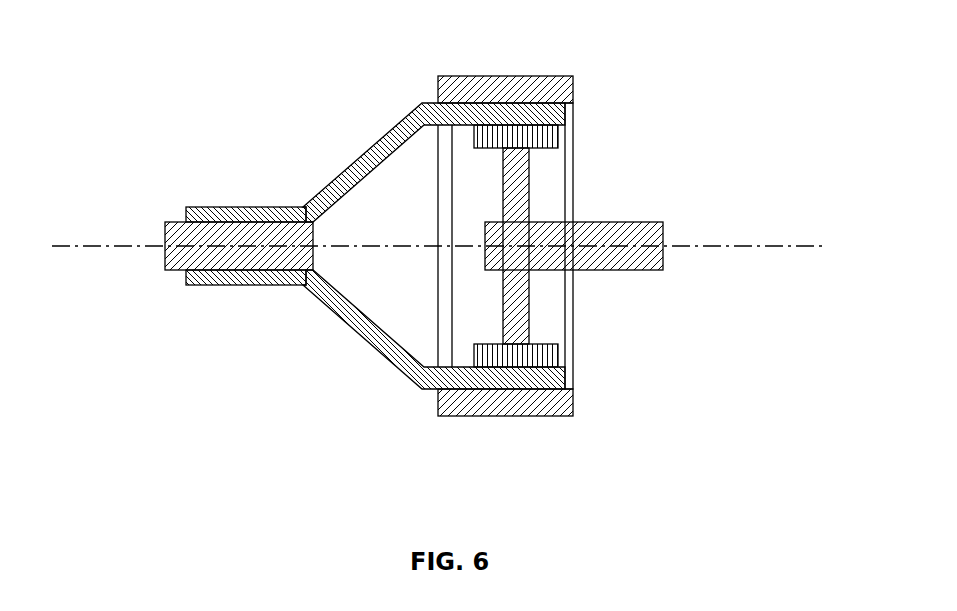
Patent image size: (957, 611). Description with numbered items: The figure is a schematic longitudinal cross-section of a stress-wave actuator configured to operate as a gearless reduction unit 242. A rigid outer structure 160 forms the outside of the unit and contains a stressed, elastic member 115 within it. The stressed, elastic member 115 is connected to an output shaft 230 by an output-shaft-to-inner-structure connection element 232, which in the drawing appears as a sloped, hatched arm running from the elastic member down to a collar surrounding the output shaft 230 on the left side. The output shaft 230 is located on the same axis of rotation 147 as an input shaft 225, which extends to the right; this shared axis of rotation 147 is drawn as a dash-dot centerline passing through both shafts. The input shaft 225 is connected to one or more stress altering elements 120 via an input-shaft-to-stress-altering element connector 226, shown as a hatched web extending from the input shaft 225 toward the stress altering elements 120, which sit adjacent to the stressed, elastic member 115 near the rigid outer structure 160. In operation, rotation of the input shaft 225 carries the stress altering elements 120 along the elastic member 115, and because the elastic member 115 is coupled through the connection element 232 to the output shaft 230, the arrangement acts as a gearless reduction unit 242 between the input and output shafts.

The stressed, elastic member 115 is at (565, 112).
The stress altering element 120 is at (558, 133).
The axis of rotation 147 is at (735, 246).
The rigid outer structure 160 is at (438, 82).
The input shaft 225 is at (645, 268).
The input-shaft-to-stress-altering element connector 226 is at (530, 313).
The output shaft 230 is at (165, 237).
The output-shaft-to-inner-structure connection element 232 is at (365, 155).
The gearless reduction unit 242 is at (556, 516).